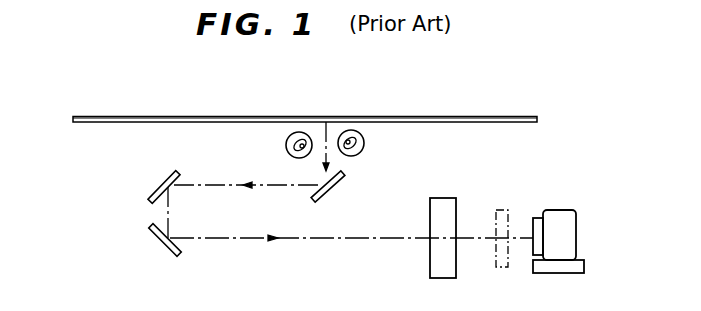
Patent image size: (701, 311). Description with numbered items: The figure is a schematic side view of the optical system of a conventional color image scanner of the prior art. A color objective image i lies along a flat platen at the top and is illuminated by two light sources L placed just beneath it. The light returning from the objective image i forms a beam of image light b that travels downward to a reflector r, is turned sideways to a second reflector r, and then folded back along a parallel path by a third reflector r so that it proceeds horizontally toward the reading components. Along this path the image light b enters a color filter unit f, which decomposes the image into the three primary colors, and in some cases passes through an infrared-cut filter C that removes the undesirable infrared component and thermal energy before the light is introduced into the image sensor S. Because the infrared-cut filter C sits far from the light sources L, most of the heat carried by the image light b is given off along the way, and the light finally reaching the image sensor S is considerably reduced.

The color objective image i is at (430, 115).
The light source L is at (286, 139).
The reflector r is at (343, 185).
The image light b is at (310, 237).
The color filter unit f is at (443, 206).
The infrared-cut filter C is at (504, 206).
The image sensor S is at (560, 216).